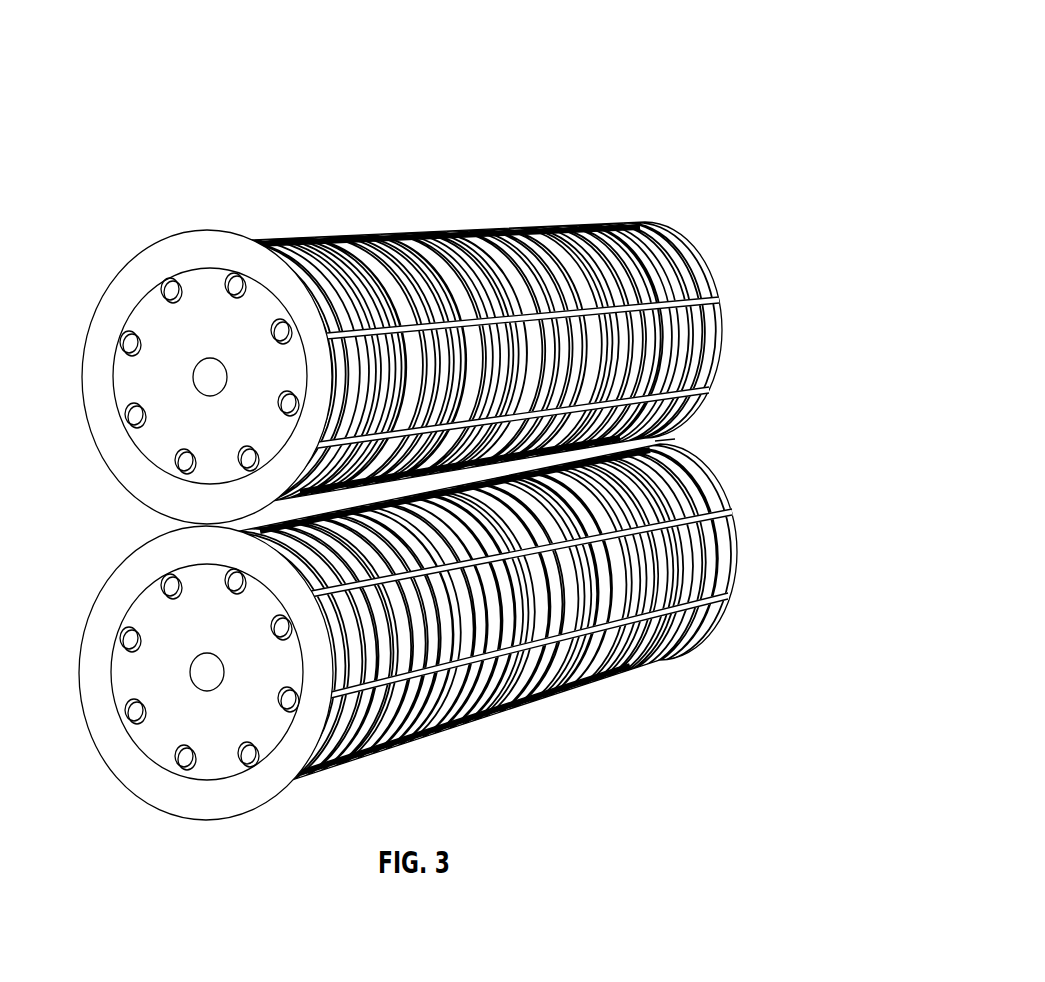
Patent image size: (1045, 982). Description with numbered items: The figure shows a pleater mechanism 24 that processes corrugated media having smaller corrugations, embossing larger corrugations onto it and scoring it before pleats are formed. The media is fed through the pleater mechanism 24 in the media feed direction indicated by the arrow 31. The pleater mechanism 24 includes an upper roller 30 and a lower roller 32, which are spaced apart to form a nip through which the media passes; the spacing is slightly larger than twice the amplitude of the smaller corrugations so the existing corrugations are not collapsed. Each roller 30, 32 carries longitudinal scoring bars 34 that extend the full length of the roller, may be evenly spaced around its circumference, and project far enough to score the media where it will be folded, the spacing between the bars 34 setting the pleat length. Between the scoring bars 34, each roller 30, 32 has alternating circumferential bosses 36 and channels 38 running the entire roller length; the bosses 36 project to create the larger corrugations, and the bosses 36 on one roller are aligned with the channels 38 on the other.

The pleater mechanism 24 is at (735, 37).
The upper roller 30 is at (419, 298).
The lower roller 32 is at (723, 650).
The arrow 31 is at (686, 438).
The channels 38 is at (387, 233).
The longitudinal scoring bars 34 is at (472, 235).
The bosses 36 is at (537, 233).